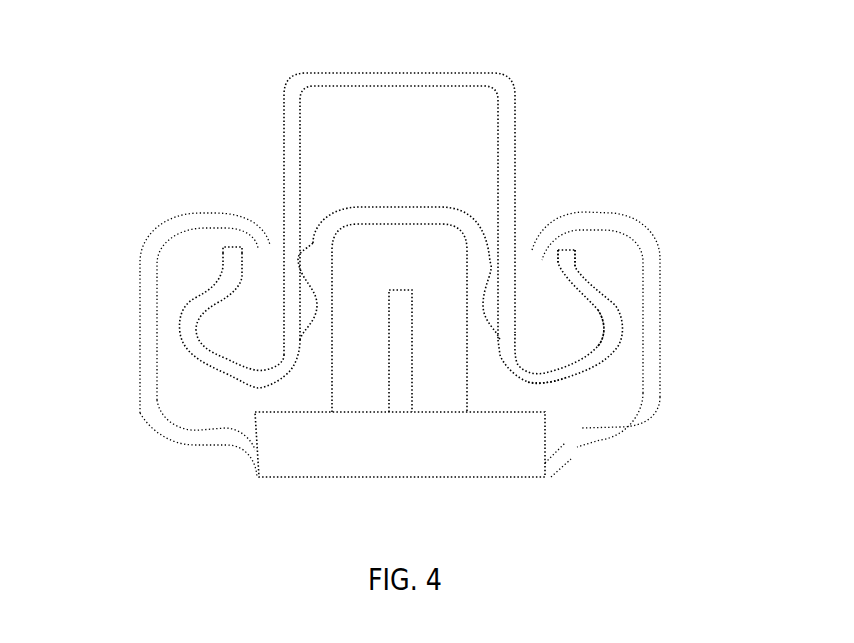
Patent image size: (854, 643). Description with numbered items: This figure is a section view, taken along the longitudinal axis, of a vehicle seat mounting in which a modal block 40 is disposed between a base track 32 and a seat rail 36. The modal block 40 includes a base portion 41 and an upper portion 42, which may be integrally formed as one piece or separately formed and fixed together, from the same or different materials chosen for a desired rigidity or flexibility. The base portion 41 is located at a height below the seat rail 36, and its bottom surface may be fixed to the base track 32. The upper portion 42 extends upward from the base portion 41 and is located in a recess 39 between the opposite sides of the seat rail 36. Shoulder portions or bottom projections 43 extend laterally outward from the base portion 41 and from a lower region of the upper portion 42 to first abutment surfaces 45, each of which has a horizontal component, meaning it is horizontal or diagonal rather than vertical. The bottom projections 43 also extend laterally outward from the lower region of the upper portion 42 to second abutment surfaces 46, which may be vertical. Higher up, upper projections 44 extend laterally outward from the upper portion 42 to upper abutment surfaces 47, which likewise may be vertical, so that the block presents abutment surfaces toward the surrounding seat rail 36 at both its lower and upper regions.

The base track 32 is at (233, 453).
The seat rail 36 is at (288, 137).
The recess 39 is at (413, 178).
The modal block 40 is at (350, 315).
The base portion 41 is at (345, 431).
The upper portion 42 is at (380, 268).
The bottom projections 43 is at (527, 400).
The upper projections 44 is at (490, 267).
The first abutment surfaces 45 is at (530, 383).
The second abutment surfaces 46 is at (500, 340).
The upper abutment surfaces 47 is at (500, 278).